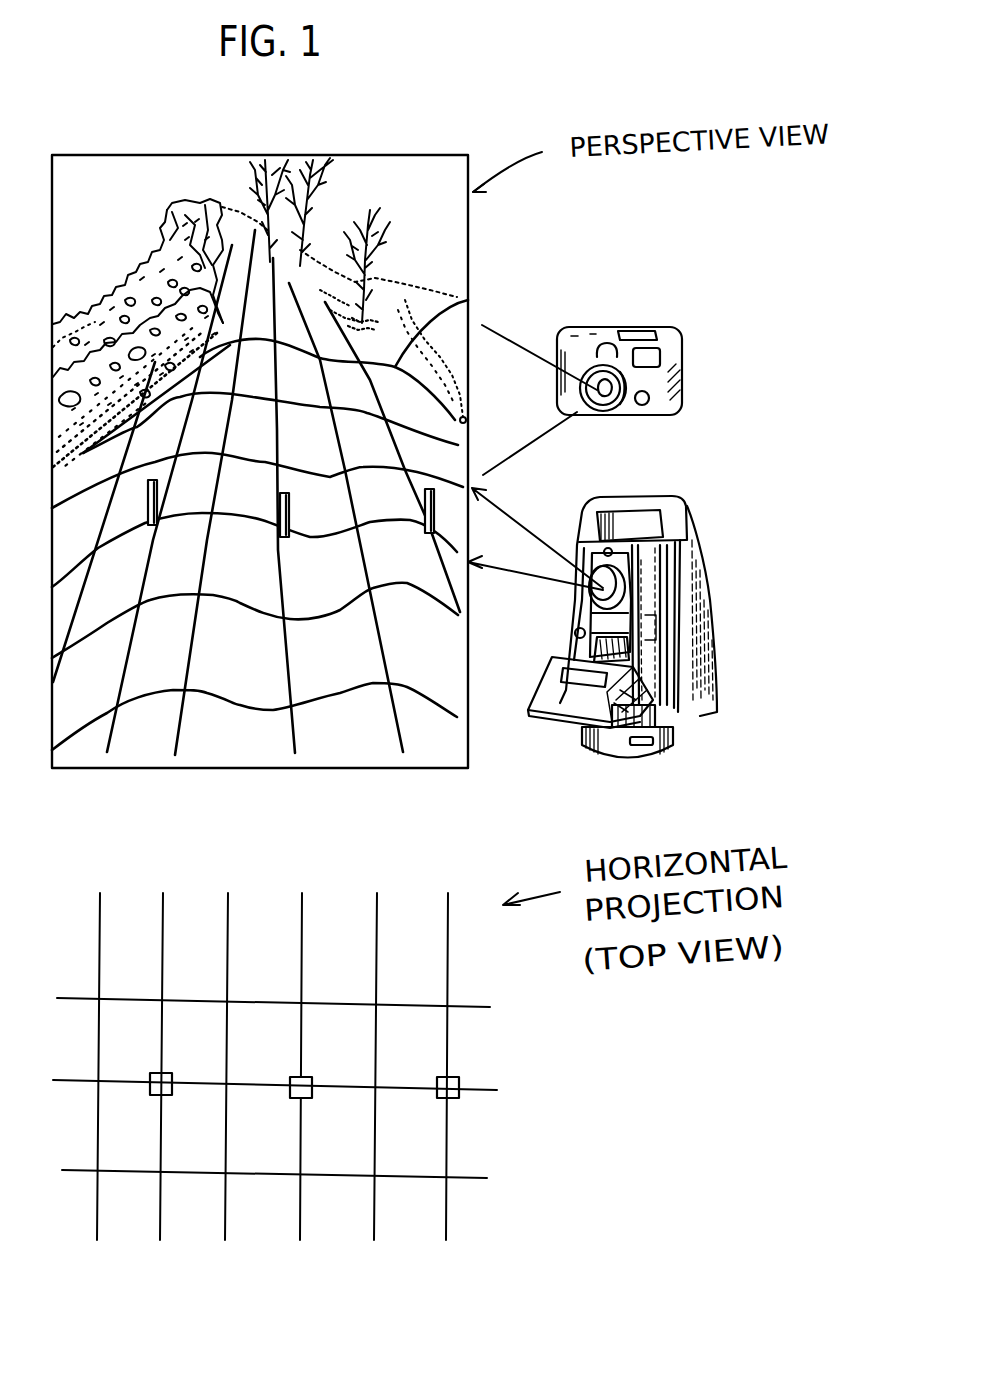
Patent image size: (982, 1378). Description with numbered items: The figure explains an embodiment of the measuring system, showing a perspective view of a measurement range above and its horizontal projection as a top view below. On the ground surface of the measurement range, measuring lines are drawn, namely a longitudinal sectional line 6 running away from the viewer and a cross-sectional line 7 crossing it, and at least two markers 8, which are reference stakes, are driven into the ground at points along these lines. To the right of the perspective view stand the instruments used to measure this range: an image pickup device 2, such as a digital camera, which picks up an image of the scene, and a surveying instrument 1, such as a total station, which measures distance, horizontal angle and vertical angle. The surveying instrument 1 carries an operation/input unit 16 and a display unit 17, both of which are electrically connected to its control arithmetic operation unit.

The surveying instrument 1 is at (592, 641).
The image pickup device 2 is at (645, 328).
The longitudinal sectional line 6 is at (292, 263).
The cross-sectional line 7 is at (465, 304).
The marker 8 is at (468, 512).
The operation/input unit 16 is at (597, 730).
The display unit 17 is at (563, 702).